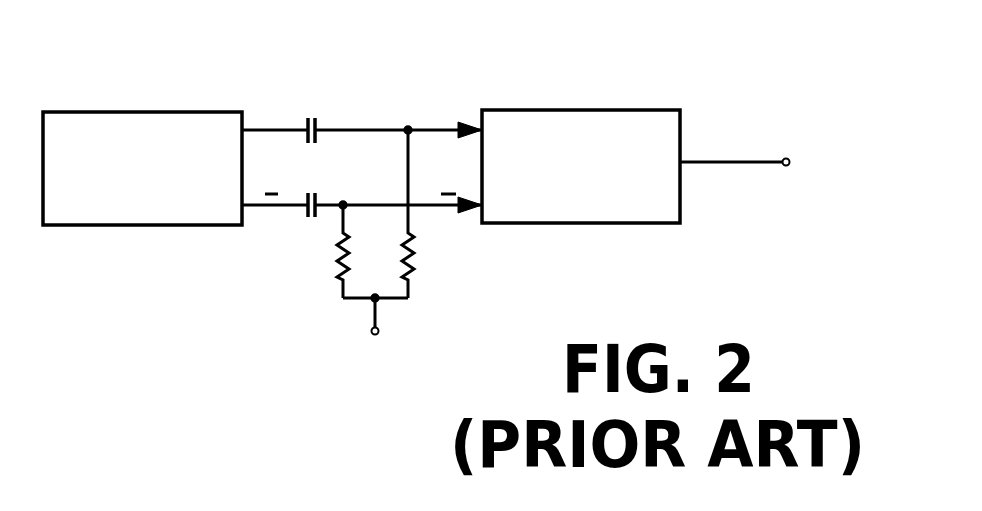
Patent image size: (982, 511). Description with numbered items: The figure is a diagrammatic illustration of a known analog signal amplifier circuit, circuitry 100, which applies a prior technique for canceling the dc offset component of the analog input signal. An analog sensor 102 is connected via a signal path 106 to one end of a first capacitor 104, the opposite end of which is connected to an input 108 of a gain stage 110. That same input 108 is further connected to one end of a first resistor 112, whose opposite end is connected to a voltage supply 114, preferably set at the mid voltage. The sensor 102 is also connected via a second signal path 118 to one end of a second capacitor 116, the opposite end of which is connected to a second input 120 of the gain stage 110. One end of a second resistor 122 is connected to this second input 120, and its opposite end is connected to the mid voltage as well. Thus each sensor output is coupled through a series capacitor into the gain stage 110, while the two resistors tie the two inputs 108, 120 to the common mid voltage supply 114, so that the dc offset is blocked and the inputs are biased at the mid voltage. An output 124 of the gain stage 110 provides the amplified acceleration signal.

The circuitry 100 is at (163, 315).
The analog sensor 102 is at (82, 112).
The capacitor C1 104 is at (320, 128).
The signal path 106 is at (298, 127).
The input of gain stage 108 is at (476, 120).
The gain stage 110 is at (661, 110).
The resistor R1 112 is at (410, 267).
The voltage supply 114 is at (379, 334).
The second capacitor C2 116 is at (305, 210).
The signal path 118 is at (267, 208).
The second input of gain stage 120 is at (475, 209).
The second resistor R2 122 is at (340, 268).
The output of gain stage 124 is at (786, 166).